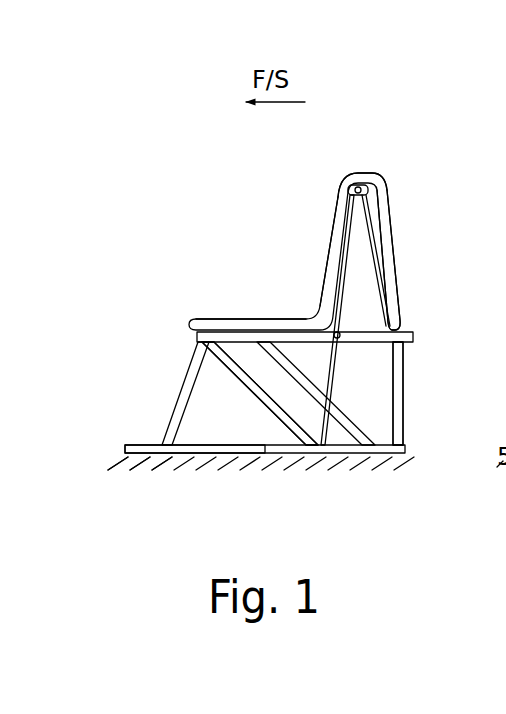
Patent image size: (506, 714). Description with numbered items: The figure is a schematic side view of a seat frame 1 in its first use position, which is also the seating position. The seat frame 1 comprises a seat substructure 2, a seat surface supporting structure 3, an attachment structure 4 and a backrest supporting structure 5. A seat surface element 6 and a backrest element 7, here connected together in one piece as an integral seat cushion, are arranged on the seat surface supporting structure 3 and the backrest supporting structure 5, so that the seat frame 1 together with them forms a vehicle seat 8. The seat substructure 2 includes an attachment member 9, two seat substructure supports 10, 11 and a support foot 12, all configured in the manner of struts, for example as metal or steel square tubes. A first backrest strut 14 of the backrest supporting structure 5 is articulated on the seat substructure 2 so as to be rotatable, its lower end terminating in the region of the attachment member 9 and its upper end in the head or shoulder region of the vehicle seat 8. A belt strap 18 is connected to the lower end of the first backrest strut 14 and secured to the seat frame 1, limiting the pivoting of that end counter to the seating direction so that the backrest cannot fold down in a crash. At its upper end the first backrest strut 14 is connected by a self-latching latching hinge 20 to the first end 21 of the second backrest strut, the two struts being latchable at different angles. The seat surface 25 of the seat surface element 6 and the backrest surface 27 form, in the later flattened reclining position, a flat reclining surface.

The seat frame 1 is at (269, 477).
The seat substructure 2 is at (134, 417).
The seat surface supporting structure 3 is at (298, 352).
The attachment structure 4 is at (238, 350).
The backrest supporting structure 5 is at (374, 352).
The seat surface element 6 is at (217, 316).
The backrest element 7 is at (328, 234).
The vehicle seat 8 is at (155, 466).
The attachment member 9 is at (175, 452).
The seat substructure support 10 is at (168, 424).
The seat substructure support 11 is at (398, 436).
The support foot 12 is at (350, 432).
The first backrest strut 14 is at (335, 364).
The belt strap 18 is at (257, 388).
The latching hinge 20 is at (360, 185).
The first end of the second backrest strut 21 is at (394, 187).
The seat surface 25 is at (247, 310).
The backrest surface 27 is at (395, 227).